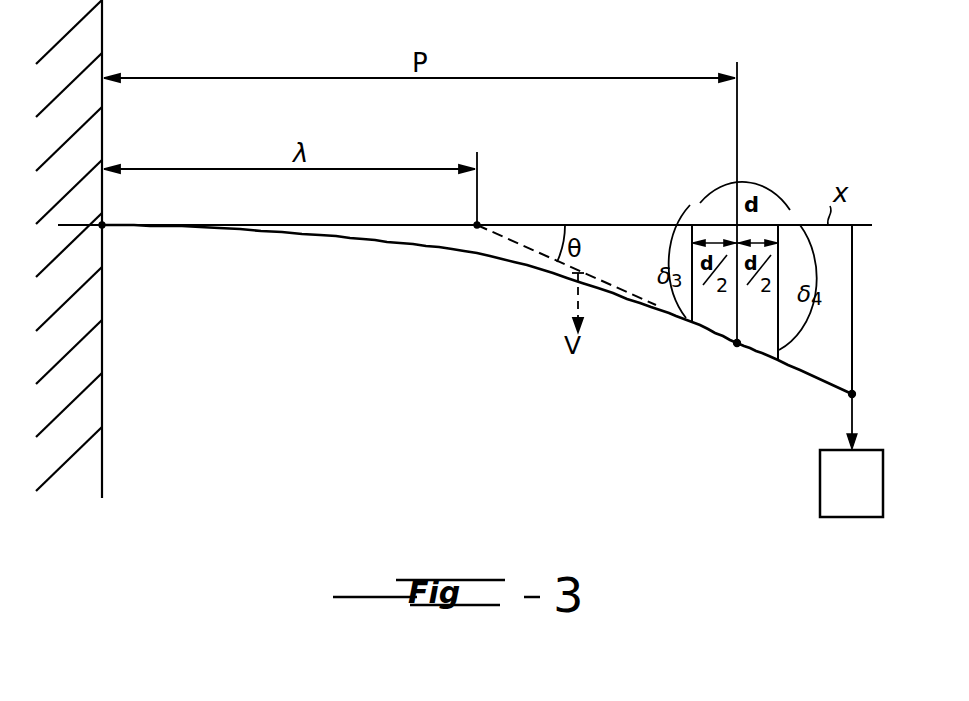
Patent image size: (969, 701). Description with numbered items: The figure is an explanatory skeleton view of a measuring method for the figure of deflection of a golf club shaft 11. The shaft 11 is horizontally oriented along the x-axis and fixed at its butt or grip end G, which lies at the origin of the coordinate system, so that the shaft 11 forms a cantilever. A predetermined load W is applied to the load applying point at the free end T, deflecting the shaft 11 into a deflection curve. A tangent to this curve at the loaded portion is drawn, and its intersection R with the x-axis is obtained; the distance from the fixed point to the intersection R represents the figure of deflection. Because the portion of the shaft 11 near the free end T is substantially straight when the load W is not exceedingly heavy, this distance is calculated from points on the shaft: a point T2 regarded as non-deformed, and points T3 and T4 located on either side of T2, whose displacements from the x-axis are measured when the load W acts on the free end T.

The golf club shaft 11 is at (448, 258).
The butt end G is at (104, 227).
The intersection R is at (480, 223).
The free end T is at (855, 392).
The point T2 is at (735, 346).
The point T3 is at (675, 259).
The point T4 is at (786, 278).
The load W is at (851, 455).